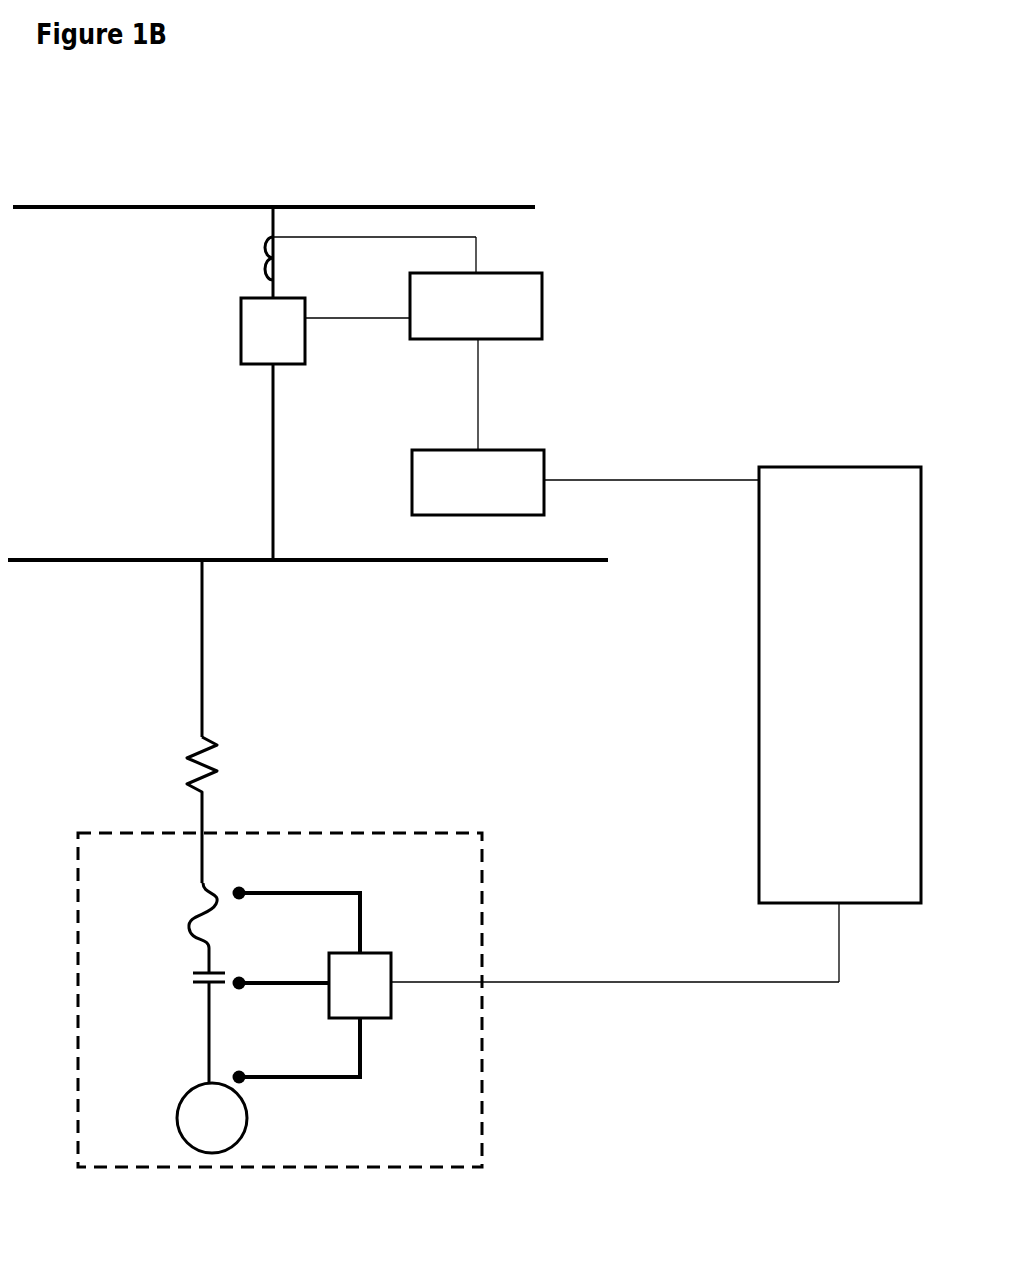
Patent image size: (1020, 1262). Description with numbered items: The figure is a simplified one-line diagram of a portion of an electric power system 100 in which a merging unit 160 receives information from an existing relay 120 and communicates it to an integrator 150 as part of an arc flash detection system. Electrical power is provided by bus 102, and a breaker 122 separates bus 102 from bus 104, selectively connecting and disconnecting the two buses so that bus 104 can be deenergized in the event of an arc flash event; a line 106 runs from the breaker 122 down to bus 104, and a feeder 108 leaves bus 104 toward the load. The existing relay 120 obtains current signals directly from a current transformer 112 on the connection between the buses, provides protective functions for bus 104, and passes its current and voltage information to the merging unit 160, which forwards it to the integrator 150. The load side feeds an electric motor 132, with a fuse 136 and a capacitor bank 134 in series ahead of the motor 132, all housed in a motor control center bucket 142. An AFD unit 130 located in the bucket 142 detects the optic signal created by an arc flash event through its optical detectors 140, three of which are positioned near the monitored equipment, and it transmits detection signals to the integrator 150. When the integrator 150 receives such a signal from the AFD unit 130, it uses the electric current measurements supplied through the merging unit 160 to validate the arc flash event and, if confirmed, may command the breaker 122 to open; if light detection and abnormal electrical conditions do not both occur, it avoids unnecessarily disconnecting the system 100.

The electric power system 100 is at (494, 144).
The bus 102 is at (103, 211).
The bus 104 is at (87, 557).
The feeder line 106 is at (281, 447).
The load feeder 108 is at (206, 646).
The current transformer 112 is at (263, 268).
The existing relay 120 is at (492, 272).
The breaker 122 is at (240, 327).
The AFD unit 130 is at (393, 1005).
The electric motor 132 is at (176, 1103).
The capacitor bank 134 is at (198, 981).
The fuse 136 is at (202, 910).
The optical detectors 140 is at (365, 905).
The motor control center bucket 142 is at (485, 911).
The integrator 150 is at (757, 575).
The merging unit 160 is at (551, 464).